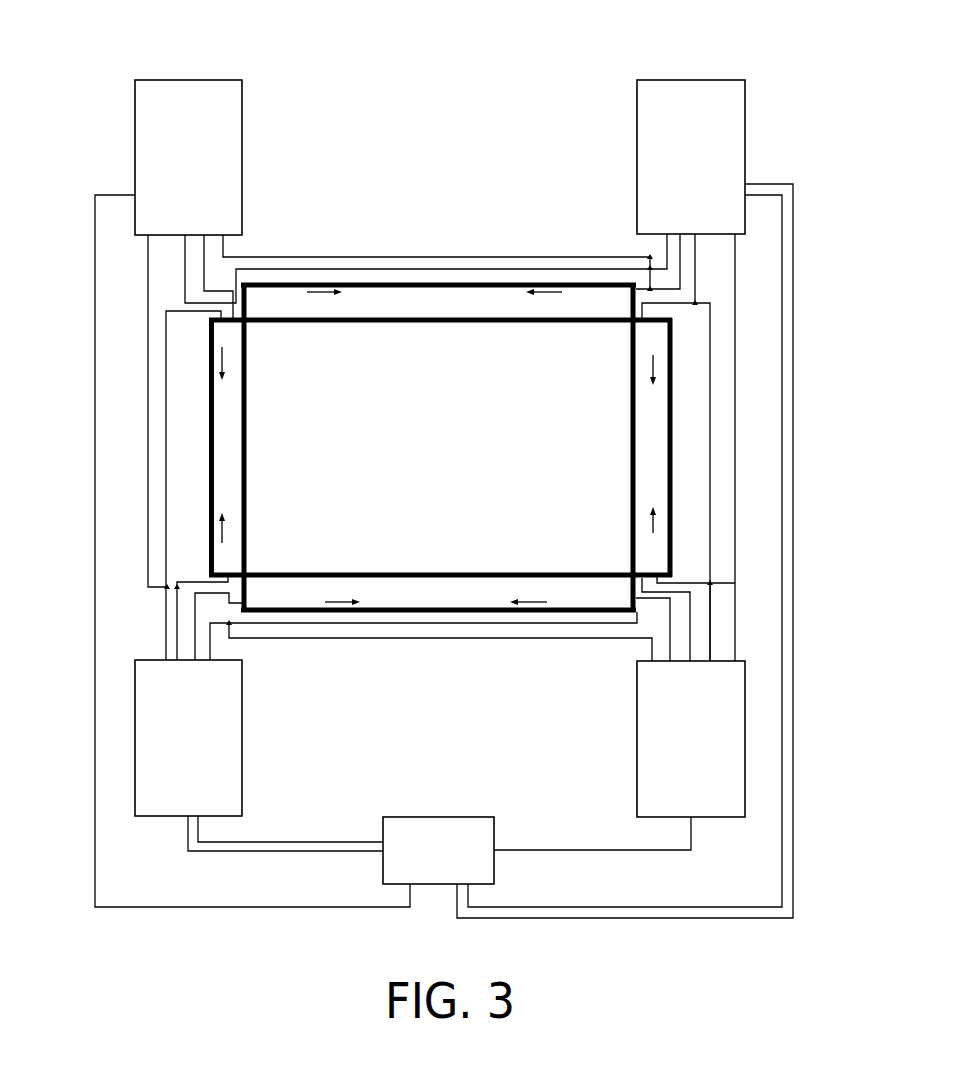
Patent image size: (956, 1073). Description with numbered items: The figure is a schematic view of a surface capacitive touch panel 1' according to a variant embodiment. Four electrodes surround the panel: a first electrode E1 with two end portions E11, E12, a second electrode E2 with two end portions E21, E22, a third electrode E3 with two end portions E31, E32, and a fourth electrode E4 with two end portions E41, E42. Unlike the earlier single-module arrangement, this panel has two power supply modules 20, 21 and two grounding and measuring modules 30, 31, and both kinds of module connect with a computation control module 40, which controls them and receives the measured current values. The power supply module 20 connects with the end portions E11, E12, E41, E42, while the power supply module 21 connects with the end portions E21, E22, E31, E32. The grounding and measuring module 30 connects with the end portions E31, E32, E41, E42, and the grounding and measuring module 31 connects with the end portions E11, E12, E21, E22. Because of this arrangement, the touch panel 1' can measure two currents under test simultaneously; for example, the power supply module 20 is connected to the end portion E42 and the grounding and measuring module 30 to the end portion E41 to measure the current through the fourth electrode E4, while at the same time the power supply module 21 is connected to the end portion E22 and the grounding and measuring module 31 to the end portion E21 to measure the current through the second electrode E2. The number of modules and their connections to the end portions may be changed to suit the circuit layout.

The surface capacitive touch panel 1' is at (445, 462).
The power supply module 20 is at (135, 152).
The grounding and measuring module 31 is at (745, 158).
The grounding and measuring module 30 is at (242, 757).
The power supply module 21 is at (745, 727).
The computation control module 40 is at (494, 830).
The first electrode E1 is at (438, 249).
The end portion E11 is at (247, 310).
The end portion E12 is at (632, 308).
The second electrode E2 is at (741, 447).
The end portion E21 is at (670, 350).
The end portion E22 is at (652, 562).
The third electrode E3 is at (438, 650).
The end portion E31 is at (630, 593).
The end portion E32 is at (247, 585).
The fourth electrode E4 is at (143, 447).
The end portion E41 is at (222, 578).
The end portion E42 is at (222, 327).